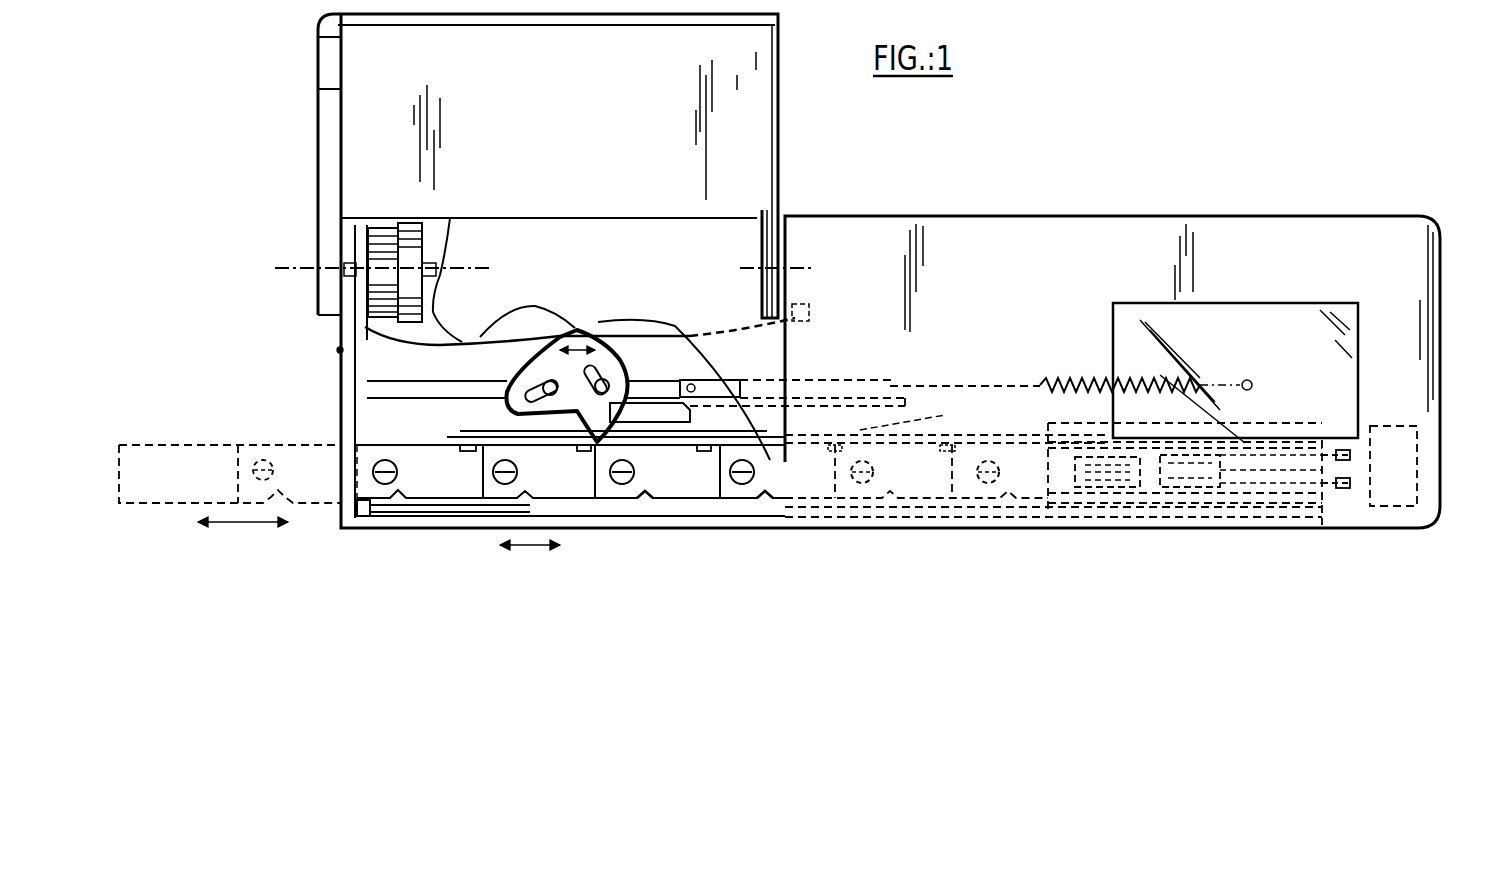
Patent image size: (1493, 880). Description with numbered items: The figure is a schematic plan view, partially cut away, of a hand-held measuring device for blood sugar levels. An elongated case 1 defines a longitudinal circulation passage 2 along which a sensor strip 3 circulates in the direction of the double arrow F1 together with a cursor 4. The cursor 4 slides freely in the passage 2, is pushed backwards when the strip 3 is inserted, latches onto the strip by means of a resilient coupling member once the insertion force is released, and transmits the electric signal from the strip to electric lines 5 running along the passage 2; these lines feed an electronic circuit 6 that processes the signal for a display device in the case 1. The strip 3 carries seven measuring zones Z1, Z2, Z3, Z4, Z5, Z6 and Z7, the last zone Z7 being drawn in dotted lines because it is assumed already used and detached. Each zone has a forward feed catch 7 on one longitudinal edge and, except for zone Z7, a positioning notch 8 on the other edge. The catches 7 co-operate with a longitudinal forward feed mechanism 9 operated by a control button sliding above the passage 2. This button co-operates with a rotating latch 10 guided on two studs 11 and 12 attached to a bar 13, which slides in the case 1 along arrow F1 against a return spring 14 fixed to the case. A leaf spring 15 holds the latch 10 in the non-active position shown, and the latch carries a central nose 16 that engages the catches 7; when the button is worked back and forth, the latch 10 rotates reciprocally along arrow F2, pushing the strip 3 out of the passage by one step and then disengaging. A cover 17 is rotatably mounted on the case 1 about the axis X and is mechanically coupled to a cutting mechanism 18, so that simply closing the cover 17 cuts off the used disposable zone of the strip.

The case 1 is at (1028, 217).
The circulation passage 2 is at (380, 447).
The sensor strip 3 is at (462, 502).
The cursor 4 is at (1068, 488).
The electric lines 5 is at (1336, 490).
The electronic circuit 6 is at (1410, 455).
The forward feed catch 7 is at (473, 446).
The positioning notch 8 is at (652, 498).
The forward feed mechanism 9 is at (686, 358).
The rotating latch 10 is at (608, 350).
The stud 11 is at (548, 382).
The stud 12 is at (612, 370).
The bar 13 is at (717, 388).
The return spring 14 is at (1050, 380).
The leaf spring 15 is at (415, 340).
The central nose 16 is at (600, 410).
The cover 17 is at (757, 57).
The cutting mechanism 18 is at (338, 350).
The measuring zone Z1 is at (1032, 480).
The measuring zone Z2 is at (925, 480).
The measuring zone Z3 is at (812, 480).
The measuring zone Z4 is at (700, 472).
The measuring zone Z5 is at (572, 490).
The measuring zone Z6 is at (435, 483).
The measuring zone Z7 is at (313, 492).
The double arrow F1 is at (530, 563).
The arrow F2 is at (590, 340).
The axis X is at (552, 268).